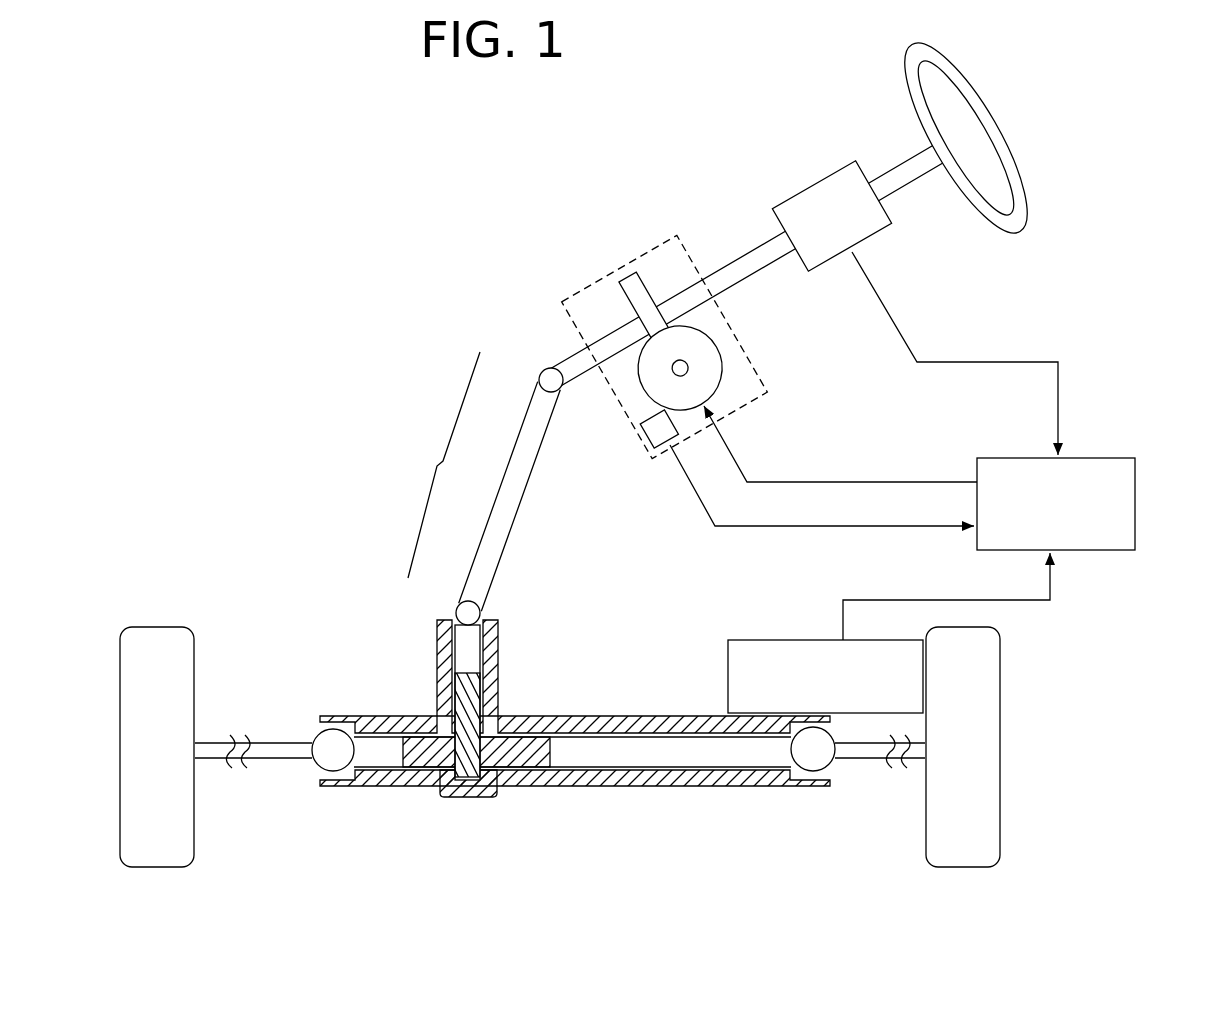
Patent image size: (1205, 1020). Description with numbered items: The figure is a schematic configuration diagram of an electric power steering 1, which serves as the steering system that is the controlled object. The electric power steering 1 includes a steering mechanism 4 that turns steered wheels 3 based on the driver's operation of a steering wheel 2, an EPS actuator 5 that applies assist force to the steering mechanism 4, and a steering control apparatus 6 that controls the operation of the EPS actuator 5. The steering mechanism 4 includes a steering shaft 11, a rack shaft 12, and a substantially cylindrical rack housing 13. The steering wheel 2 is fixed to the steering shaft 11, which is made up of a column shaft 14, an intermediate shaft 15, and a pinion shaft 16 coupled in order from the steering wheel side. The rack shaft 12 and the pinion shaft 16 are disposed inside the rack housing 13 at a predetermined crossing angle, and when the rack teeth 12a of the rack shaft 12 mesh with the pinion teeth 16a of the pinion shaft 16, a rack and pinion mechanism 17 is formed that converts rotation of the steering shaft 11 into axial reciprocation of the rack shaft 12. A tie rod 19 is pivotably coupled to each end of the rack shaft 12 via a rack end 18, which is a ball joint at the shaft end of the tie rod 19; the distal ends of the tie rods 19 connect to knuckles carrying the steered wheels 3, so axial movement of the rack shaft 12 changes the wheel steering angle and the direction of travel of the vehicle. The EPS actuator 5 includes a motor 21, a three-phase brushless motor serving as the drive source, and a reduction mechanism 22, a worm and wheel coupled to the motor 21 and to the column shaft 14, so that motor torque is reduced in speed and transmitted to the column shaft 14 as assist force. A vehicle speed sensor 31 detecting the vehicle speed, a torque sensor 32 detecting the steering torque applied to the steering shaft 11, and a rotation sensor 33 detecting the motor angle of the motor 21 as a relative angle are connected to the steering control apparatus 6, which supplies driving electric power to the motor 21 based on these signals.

The electric power steering 1 is at (190, 144).
The steering wheel 2 is at (973, 83).
The steered wheels 3 is at (150, 868).
The steering mechanism 4 is at (211, 601).
The EPS actuator 5 is at (665, 242).
The steering control apparatus 6 is at (1135, 478).
The steering shaft 11 is at (672, 362).
The rack shaft 12 is at (572, 755).
The rack teeth 12a is at (430, 767).
The rack housing 13 is at (635, 716).
The column shaft 14 is at (543, 365).
The intermediate shaft 15 is at (507, 498).
The pinion shaft 16 is at (465, 716).
The pinion teeth 16a is at (470, 797).
The rack and pinion mechanism 17 is at (495, 785).
The rack end 18 is at (333, 762).
The tie rod 19 is at (272, 754).
The motor 21 is at (712, 342).
The reduction mechanism 22 is at (658, 369).
The vehicle speed sensor 31 is at (787, 640).
The torque sensor 32 is at (800, 192).
The rotation sensor 33 is at (650, 450).